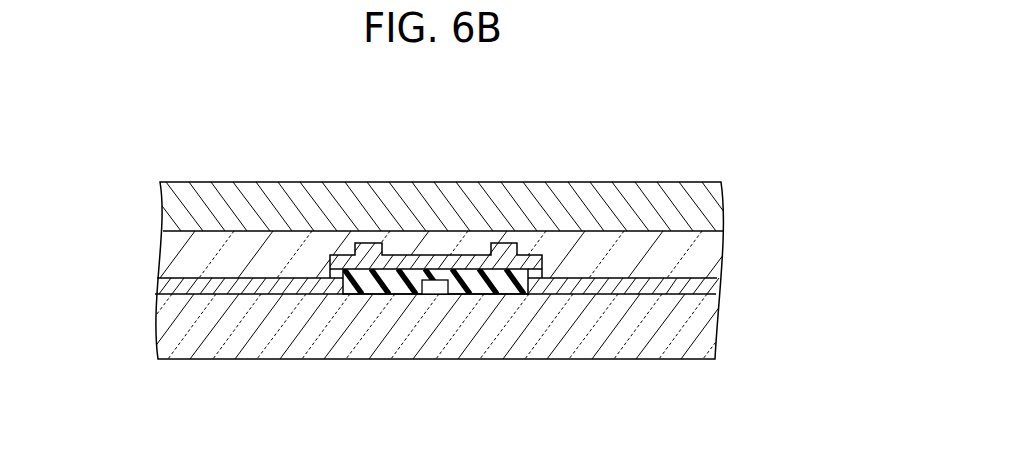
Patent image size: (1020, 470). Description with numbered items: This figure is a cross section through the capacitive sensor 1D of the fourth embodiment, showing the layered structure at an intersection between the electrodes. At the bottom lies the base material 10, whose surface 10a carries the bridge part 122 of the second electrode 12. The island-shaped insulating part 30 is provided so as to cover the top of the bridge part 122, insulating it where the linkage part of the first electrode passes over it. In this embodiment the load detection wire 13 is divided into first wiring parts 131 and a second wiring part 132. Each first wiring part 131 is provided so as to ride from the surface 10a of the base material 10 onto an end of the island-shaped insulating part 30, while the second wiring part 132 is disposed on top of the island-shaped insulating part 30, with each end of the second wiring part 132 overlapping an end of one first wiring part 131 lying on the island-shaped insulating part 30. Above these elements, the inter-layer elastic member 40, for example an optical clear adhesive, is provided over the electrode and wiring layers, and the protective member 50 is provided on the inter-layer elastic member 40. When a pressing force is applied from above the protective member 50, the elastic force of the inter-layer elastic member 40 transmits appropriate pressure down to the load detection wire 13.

The capacitive sensor 1D is at (682, 121).
The base material 10 is at (705, 342).
The surface 10a is at (160, 280).
The second electrode 12 is at (463, 350).
The bridge part 122 is at (437, 283).
The load detection wire 13 is at (437, 200).
The first wiring part 131 is at (253, 290).
The second wiring part 132 is at (423, 260).
The island-shaped insulating part 30 is at (463, 280).
The inter-layer elastic member 40 is at (705, 251).
The protective member 50 is at (705, 203).